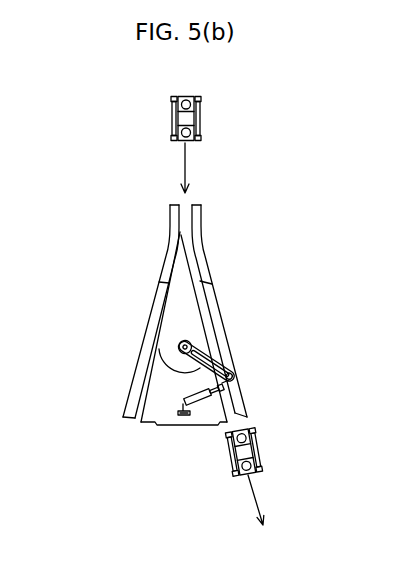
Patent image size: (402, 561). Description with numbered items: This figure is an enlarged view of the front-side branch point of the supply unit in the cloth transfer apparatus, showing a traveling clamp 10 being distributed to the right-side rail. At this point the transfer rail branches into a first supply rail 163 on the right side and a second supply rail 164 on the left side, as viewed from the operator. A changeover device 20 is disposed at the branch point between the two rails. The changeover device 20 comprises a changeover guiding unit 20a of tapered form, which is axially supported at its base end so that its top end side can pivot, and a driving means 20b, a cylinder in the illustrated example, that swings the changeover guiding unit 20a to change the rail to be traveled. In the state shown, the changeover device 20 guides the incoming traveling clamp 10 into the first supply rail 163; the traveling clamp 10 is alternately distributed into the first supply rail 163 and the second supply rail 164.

The traveling clamp 10 is at (183, 117).
The changeover device 20 is at (184, 311).
The changeover guiding unit 20a is at (190, 322).
The driving means 20b is at (203, 396).
The first supply rail 163 is at (237, 385).
The second supply rail 164 is at (140, 378).